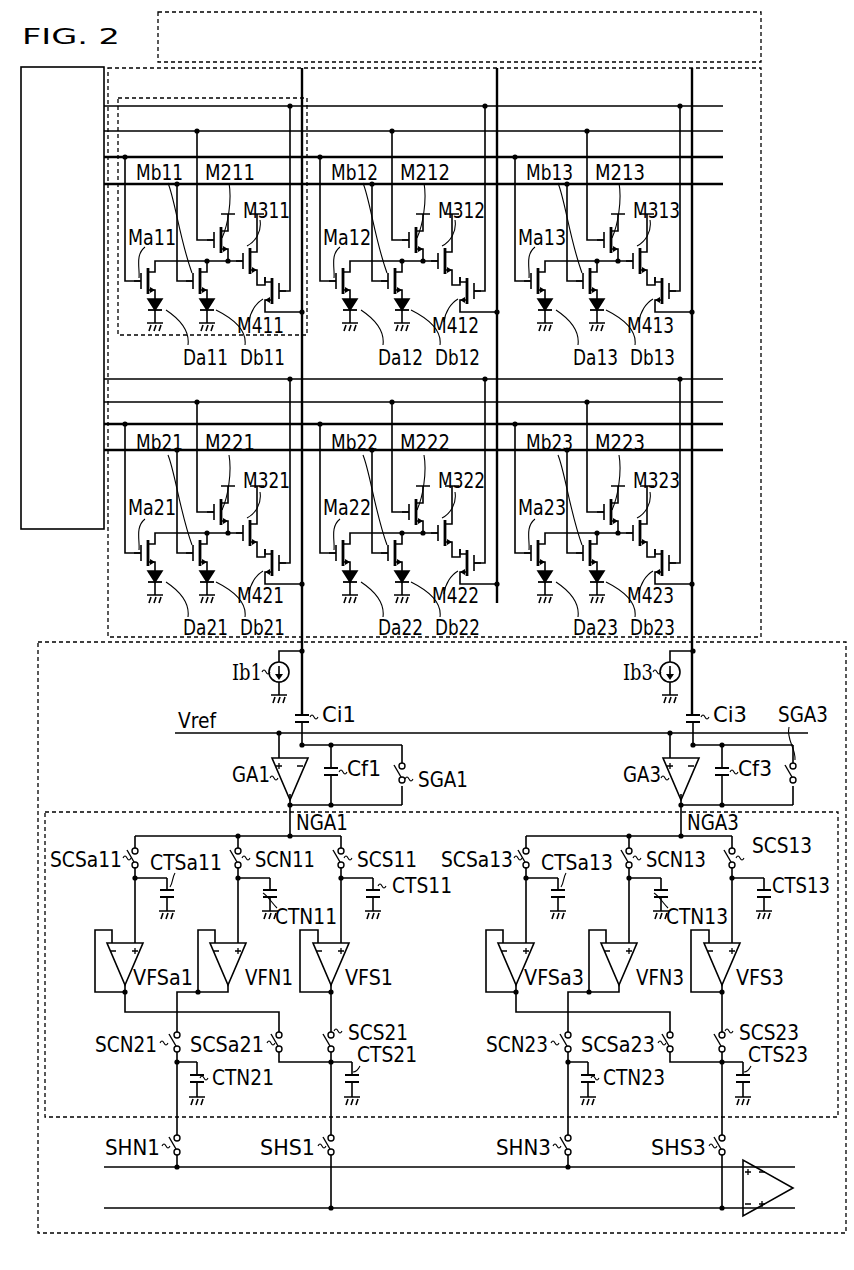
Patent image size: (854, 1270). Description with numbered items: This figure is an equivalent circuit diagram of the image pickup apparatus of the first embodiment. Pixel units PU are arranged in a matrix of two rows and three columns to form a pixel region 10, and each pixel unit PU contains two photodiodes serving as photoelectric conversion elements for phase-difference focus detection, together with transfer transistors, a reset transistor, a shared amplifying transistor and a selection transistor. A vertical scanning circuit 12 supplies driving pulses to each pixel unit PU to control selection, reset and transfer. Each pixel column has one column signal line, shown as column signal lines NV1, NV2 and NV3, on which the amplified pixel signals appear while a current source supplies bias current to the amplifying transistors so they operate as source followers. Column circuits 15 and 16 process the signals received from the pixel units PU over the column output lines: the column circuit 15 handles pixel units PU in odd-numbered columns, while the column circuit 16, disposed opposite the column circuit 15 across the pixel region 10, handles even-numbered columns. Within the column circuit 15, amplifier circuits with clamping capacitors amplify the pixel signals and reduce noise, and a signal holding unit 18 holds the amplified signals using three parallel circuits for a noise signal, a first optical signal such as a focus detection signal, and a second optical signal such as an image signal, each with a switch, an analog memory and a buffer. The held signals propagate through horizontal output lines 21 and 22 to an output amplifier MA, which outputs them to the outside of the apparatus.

The pixel region 10 is at (452, 352).
The vertical scanning circuit 12 is at (57, 530).
The column circuit 15 is at (57, 642).
The column circuit 16 is at (477, 37).
The signal holding unit 18 is at (80, 812).
The horizontal output line 21 is at (388, 1167).
The horizontal output line 22 is at (390, 1208).
The pixel unit PU is at (185, 101).
The column signal line NV1 is at (328, 391).
The column signal line NV2 is at (523, 335).
The column signal line NV3 is at (718, 391).
The output amplifier MA is at (789, 1187).